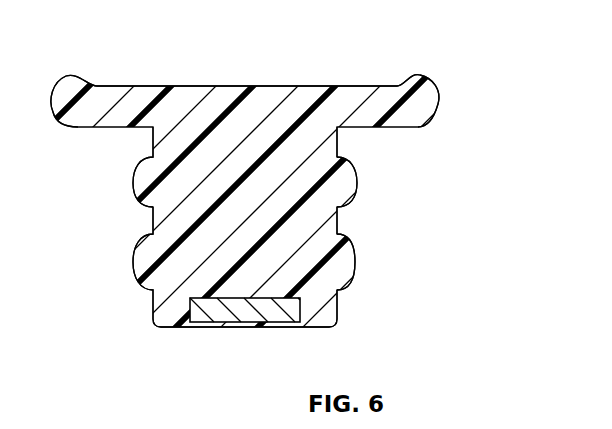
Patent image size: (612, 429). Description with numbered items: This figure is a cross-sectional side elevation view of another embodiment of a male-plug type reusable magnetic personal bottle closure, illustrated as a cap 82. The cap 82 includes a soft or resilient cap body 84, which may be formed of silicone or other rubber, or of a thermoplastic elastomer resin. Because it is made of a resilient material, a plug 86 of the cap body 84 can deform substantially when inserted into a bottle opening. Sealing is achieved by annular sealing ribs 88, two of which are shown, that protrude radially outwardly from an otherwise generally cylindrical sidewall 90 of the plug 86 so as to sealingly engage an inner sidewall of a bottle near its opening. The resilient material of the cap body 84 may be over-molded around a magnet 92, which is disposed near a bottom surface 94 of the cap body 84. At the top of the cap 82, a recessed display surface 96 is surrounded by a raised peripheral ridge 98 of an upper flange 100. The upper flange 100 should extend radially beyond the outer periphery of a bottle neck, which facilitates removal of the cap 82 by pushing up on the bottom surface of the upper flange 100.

The cap 82 is at (431, 56).
The cap body 84 is at (336, 218).
The plug 86 is at (153, 218).
The annular sealing ribs 88 is at (356, 188).
The sidewall 90 is at (153, 138).
The magnet 92 is at (263, 308).
The bottom surface 94 is at (215, 327).
The recessed display surface 96 is at (147, 86).
The raised peripheral ridge 98 is at (70, 78).
The upper flange 100 is at (438, 106).